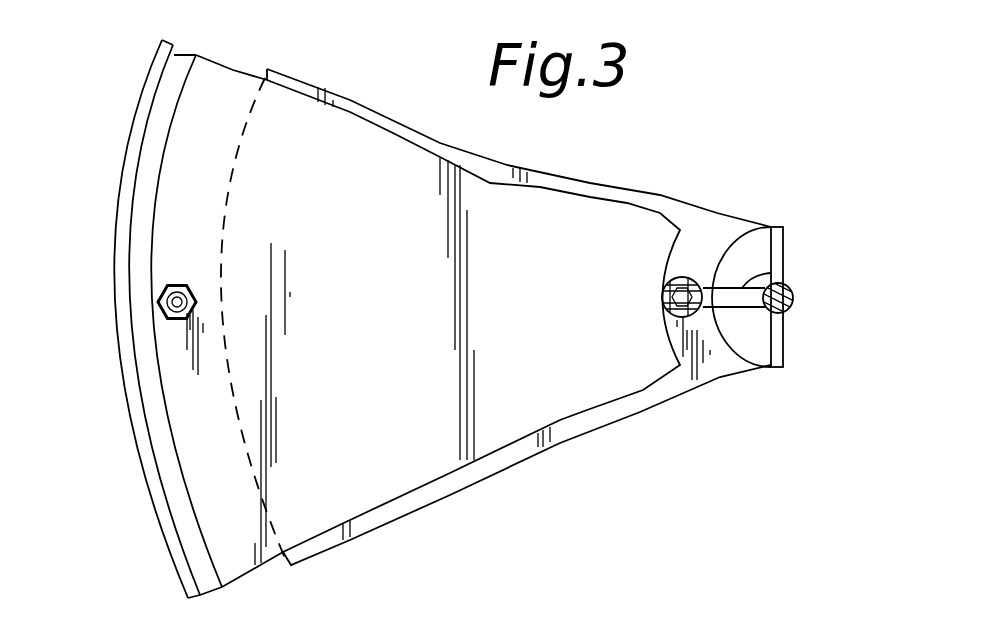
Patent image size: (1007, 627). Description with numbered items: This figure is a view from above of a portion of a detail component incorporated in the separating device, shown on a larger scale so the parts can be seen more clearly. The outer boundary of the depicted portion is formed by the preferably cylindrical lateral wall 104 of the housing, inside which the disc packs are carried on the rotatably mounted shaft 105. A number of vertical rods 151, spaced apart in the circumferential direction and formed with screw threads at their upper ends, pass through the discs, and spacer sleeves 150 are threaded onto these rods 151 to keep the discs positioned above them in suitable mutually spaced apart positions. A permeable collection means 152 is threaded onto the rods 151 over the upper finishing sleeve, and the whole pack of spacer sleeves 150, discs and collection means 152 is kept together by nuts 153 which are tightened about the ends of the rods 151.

The lateral wall 104 is at (123, 365).
The shaft 105 is at (793, 300).
The spacer sleeves 150 is at (660, 317).
The vertical rods 151 is at (178, 292).
The permeable collection means 152 is at (783, 255).
The nuts 153 is at (163, 290).